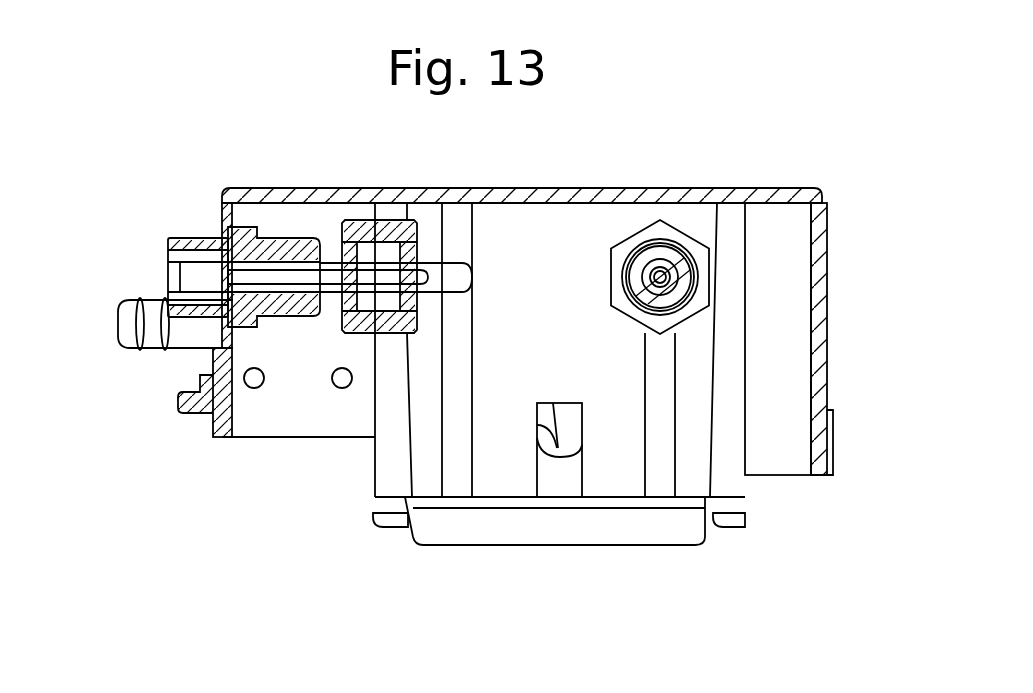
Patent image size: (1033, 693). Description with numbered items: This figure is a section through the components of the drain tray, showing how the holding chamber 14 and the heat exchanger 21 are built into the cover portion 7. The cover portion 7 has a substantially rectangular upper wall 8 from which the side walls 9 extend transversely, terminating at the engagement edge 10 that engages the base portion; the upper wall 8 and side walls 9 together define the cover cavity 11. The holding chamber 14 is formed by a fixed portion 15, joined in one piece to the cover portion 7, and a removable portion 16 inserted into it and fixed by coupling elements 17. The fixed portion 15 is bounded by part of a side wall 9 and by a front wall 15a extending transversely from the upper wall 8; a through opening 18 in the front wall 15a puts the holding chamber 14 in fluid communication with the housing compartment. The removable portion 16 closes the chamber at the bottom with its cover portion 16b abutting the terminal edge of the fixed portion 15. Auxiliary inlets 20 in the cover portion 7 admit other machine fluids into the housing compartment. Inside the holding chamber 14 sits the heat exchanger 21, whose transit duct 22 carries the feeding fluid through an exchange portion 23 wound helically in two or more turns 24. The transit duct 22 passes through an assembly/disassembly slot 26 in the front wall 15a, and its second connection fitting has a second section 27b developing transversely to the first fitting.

The cover portion 7 is at (803, 178).
The upper wall 8 is at (553, 188).
The side wall 9 is at (217, 213).
The engagement edge 10 is at (200, 413).
The cover cavity 11 is at (785, 428).
The holding chamber 14 is at (458, 555).
The fixed portion 15 is at (472, 223).
The front wall 15a is at (517, 267).
The removable portion 16 is at (567, 545).
The cover portion 16b is at (663, 520).
The coupling element 17 is at (382, 462).
The through opening 18 is at (548, 442).
The auxiliary inlet 20 is at (117, 325).
The heat exchanger 21 is at (578, 392).
The transit duct 22 is at (443, 263).
The exchange portion 23 is at (568, 430).
The turn 24 is at (573, 452).
The assembly/disassembly slot 26 is at (660, 277).
The second section 27b is at (338, 270).